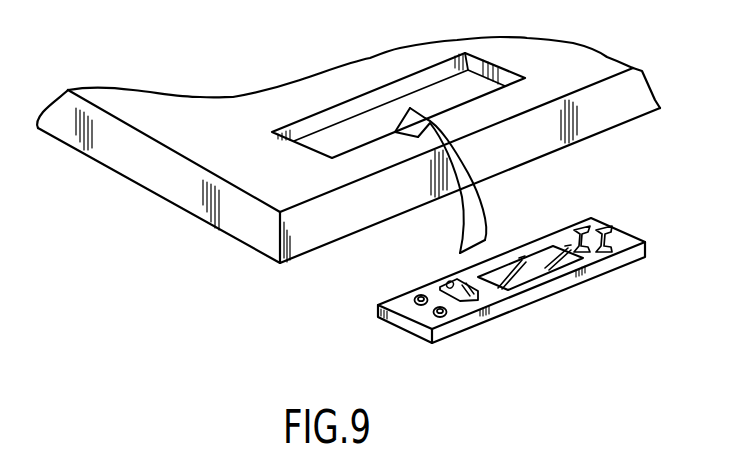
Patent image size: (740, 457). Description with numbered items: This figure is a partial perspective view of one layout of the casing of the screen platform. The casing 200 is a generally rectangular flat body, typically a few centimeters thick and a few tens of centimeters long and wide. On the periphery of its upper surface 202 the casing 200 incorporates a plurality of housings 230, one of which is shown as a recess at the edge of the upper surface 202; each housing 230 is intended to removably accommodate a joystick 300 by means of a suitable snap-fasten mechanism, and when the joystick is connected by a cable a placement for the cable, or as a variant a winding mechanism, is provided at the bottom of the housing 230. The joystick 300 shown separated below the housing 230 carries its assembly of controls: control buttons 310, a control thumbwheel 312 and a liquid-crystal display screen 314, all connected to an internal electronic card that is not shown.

The casing 200 is at (348, 152).
The upper surface of the casing 202 is at (230, 128).
The housing 230 is at (380, 130).
The joystick 300 is at (478, 275).
The control buttons 310 is at (412, 298).
The control thumbwheel 312 is at (450, 285).
The liquid-crystal display screen 314 is at (520, 275).